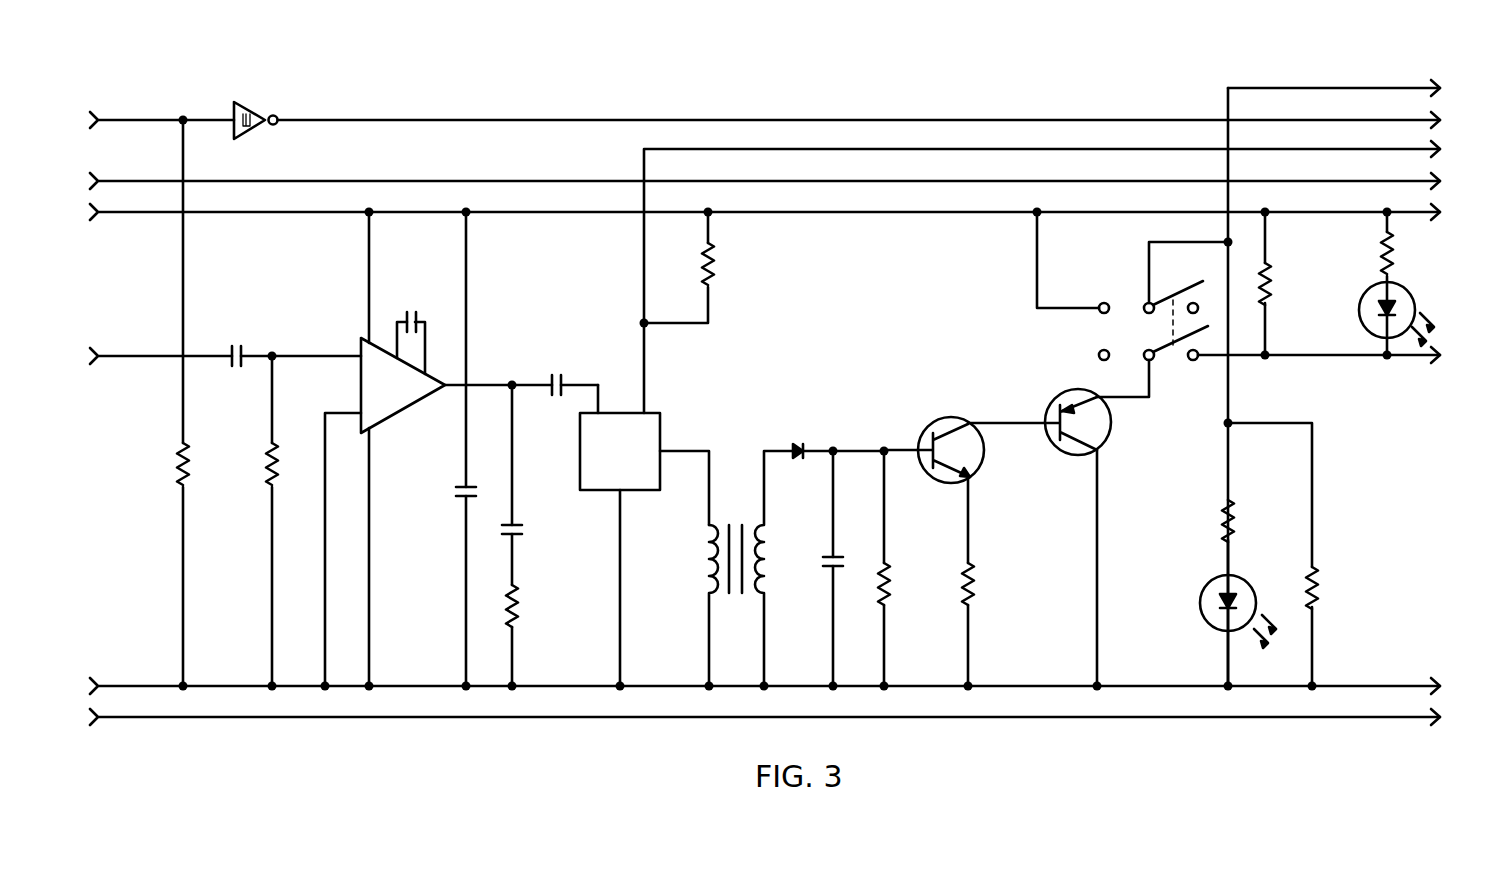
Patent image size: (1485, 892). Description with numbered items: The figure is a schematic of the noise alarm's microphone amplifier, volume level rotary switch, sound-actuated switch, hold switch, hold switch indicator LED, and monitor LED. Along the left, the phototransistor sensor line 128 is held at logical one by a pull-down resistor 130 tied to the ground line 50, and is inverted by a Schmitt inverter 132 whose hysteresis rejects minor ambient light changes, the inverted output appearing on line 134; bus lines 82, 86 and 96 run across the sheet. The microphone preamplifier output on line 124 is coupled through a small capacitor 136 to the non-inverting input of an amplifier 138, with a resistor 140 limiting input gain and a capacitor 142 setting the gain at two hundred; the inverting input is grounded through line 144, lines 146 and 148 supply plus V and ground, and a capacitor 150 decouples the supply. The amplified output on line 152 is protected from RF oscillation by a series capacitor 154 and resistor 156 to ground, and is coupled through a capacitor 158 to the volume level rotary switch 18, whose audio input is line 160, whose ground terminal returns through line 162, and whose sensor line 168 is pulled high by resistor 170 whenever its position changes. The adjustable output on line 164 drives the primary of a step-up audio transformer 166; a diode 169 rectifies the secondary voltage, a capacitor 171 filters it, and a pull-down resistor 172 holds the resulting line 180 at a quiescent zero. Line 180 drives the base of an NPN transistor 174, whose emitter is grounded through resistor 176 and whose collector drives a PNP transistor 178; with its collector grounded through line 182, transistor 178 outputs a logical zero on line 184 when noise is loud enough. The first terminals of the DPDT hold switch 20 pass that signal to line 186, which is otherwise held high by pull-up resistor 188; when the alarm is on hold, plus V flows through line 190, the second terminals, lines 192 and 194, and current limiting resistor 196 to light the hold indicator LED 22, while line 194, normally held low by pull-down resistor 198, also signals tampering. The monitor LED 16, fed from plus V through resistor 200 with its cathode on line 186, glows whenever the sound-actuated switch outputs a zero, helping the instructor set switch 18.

The monitor LED 16 is at (1362, 322).
The volume level rotary switch 18 is at (663, 421).
The hold switch 20 is at (1128, 285).
The hold switch indicator LED 22 is at (1202, 592).
The ground line 50 is at (129, 685).
The +V line 82 is at (129, 212).
The line 86 is at (129, 717).
The line 96 is at (129, 181).
The microphone preamplifier output line 124 is at (129, 355).
The sensor line 128 is at (136, 120).
The pull-down resistor 130 is at (178, 468).
The Schmitt inverter 132 is at (245, 105).
The inverted sensor output line 134 is at (434, 117).
The coupling capacitor 136 is at (248, 342).
The amplifier 138 is at (358, 340).
The resistor 140 is at (268, 469).
The gain-setting capacitor 142 is at (424, 296).
The ground line 144 is at (328, 410).
The +V supply line 146 is at (366, 262).
The ground supply line 148 is at (372, 558).
The decoupling capacitor 150 is at (456, 484).
The amplifier output line 152 is at (536, 380).
The capacitor 154 is at (518, 525).
The resistor 156 is at (518, 608).
The coupling capacitor 158 is at (566, 380).
The audio input line 160 is at (596, 402).
The ground line 162 is at (618, 578).
The volume level output line 164 is at (690, 450).
The audio transformer 166 is at (704, 554).
The sensor line 168 is at (1408, 147).
The diode 169 is at (812, 478).
The pull-up resistor 170 is at (715, 264).
The filter capacitor 171 is at (826, 566).
The pull-down resistor 172 is at (890, 566).
The NPN transistor 174 is at (924, 428).
The current-limiting resistor 176 is at (974, 582).
The PNP transistor 178 is at (1066, 390).
The digital voltage line 180 is at (868, 450).
The collector ground line 182 is at (1102, 516).
The sound-actuated switch output line 184 is at (1126, 406).
The output line 186 is at (1406, 359).
The pull-up resistor 188 is at (1272, 272).
The +V line 190 is at (1036, 272).
The line 192 is at (1182, 242).
The sensor line 194 is at (1406, 86).
The current limiting resistor 196 is at (1234, 520).
The pull-down resistor 198 is at (1317, 576).
The current limiting resistor 200 is at (1381, 247).